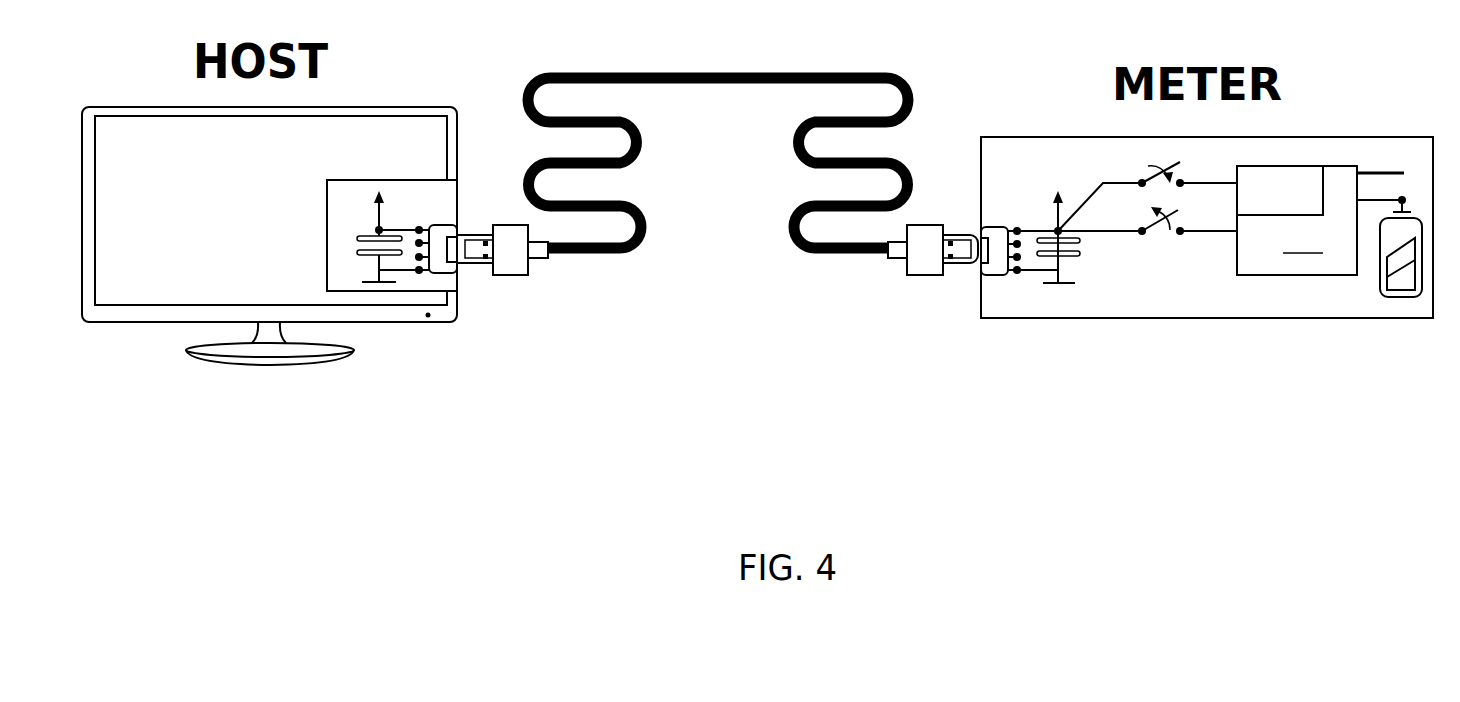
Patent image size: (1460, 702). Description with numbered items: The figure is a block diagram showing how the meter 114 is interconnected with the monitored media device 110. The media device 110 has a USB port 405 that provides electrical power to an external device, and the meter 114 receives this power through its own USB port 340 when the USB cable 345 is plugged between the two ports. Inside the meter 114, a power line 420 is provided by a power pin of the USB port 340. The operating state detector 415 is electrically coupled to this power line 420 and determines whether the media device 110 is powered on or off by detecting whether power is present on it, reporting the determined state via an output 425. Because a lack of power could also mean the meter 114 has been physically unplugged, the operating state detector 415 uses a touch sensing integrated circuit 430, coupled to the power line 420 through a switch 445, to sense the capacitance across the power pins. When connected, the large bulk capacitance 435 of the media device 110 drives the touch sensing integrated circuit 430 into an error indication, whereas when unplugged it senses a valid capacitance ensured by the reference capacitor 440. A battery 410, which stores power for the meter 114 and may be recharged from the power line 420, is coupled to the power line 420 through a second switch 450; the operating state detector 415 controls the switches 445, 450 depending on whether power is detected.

The media device 110 is at (180, 106).
The USB port 405 is at (444, 227).
The bulk capacitance 435 is at (390, 322).
The USB cable 345 is at (868, 76).
The USB port 340 is at (993, 226).
The power line 420 is at (1029, 230).
The reference capacitor 440 is at (1055, 286).
The switch 445 is at (1160, 160).
The switch 450 is at (1158, 234).
The touch sensing integrated circuit 430 is at (1279, 166).
The operating state detector 415 is at (1324, 220).
The output 425 is at (1377, 173).
The battery 410 is at (1379, 281).
The meter 114 is at (1346, 318).